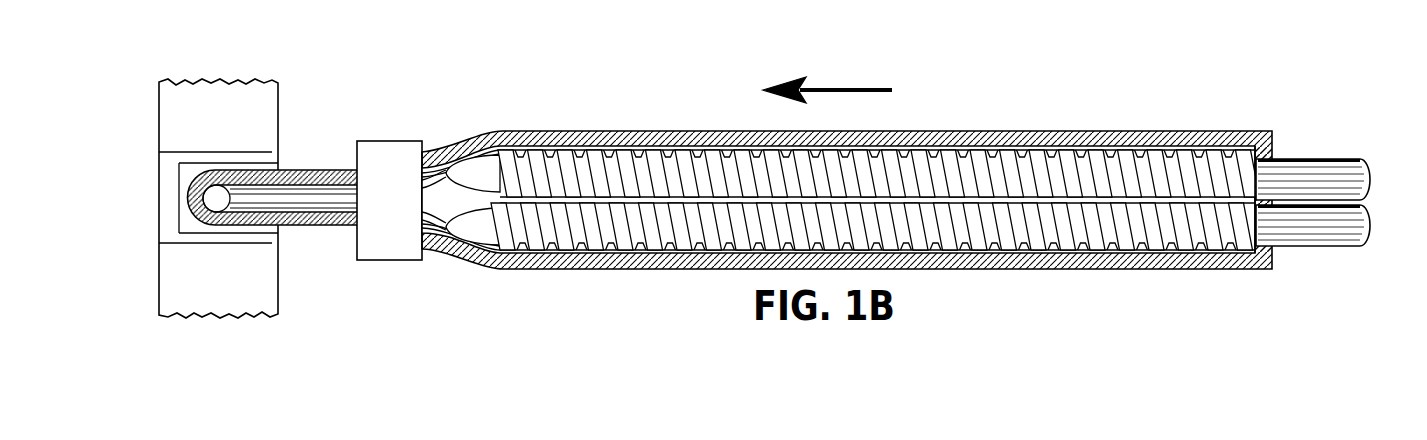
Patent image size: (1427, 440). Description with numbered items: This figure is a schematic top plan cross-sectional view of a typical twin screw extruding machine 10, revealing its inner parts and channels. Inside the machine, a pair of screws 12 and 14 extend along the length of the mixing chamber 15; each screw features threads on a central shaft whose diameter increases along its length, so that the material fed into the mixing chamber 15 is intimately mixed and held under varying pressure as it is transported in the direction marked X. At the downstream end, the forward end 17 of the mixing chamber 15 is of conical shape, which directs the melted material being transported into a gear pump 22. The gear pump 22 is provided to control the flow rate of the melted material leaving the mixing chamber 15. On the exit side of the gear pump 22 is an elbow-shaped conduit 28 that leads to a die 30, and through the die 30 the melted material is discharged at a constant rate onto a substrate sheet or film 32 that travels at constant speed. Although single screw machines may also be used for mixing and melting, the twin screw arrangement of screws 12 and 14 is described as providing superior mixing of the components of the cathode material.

The twin screw extruding machine 10 is at (764, 168).
The screw 12 is at (567, 226).
The screw 14 is at (596, 167).
The mixing chamber 15 is at (990, 131).
The forward end 17 is at (432, 183).
The gear pump 22 is at (407, 152).
The elbow-shaped conduit 28 is at (335, 172).
The die 30 is at (270, 238).
The substrate sheet or film 32 is at (262, 283).